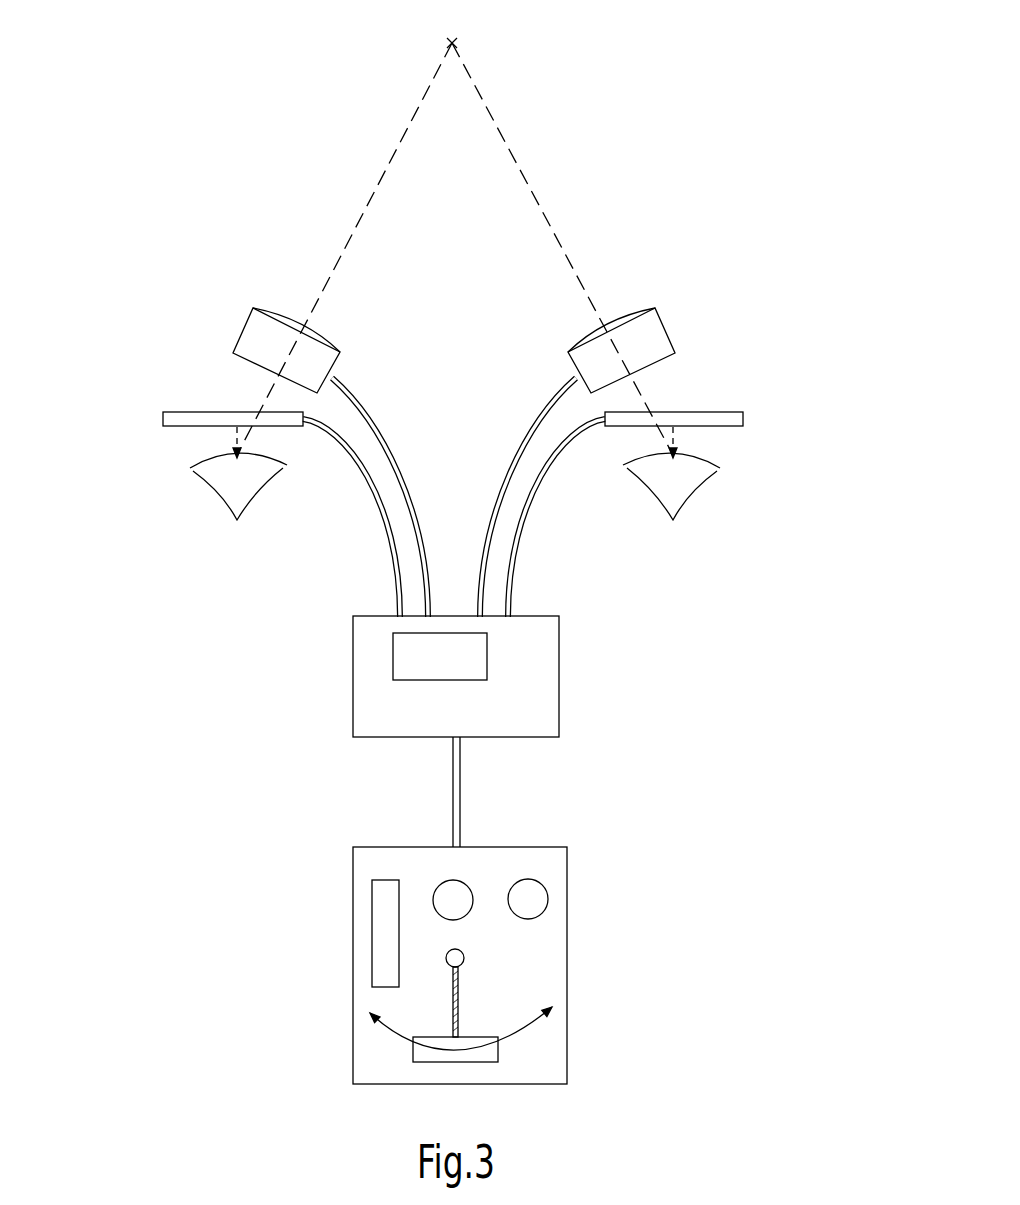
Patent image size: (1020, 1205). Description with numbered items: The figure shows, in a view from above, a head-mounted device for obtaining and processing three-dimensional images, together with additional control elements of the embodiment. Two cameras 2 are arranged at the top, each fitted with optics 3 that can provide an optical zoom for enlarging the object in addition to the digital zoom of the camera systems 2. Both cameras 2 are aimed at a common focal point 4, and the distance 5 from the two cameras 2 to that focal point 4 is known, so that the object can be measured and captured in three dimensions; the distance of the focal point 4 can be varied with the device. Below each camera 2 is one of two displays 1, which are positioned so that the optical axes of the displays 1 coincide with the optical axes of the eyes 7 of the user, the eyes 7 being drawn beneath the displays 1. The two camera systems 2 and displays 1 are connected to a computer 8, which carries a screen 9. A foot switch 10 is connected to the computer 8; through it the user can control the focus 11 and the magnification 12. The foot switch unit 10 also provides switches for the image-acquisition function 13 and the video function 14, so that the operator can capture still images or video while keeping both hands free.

The display 1 is at (165, 420).
The camera 2 is at (255, 342).
The optics 3 is at (283, 312).
The focal point 4 is at (452, 43).
The distance 5 is at (367, 208).
The eye 7 is at (233, 475).
The computer 8 is at (547, 677).
The display 9 is at (425, 658).
The foot switch 10 is at (545, 957).
The focus 11 is at (390, 917).
The magnification 12 is at (483, 1040).
The image-acquisition function 13 is at (452, 895).
The video function 14 is at (530, 895).